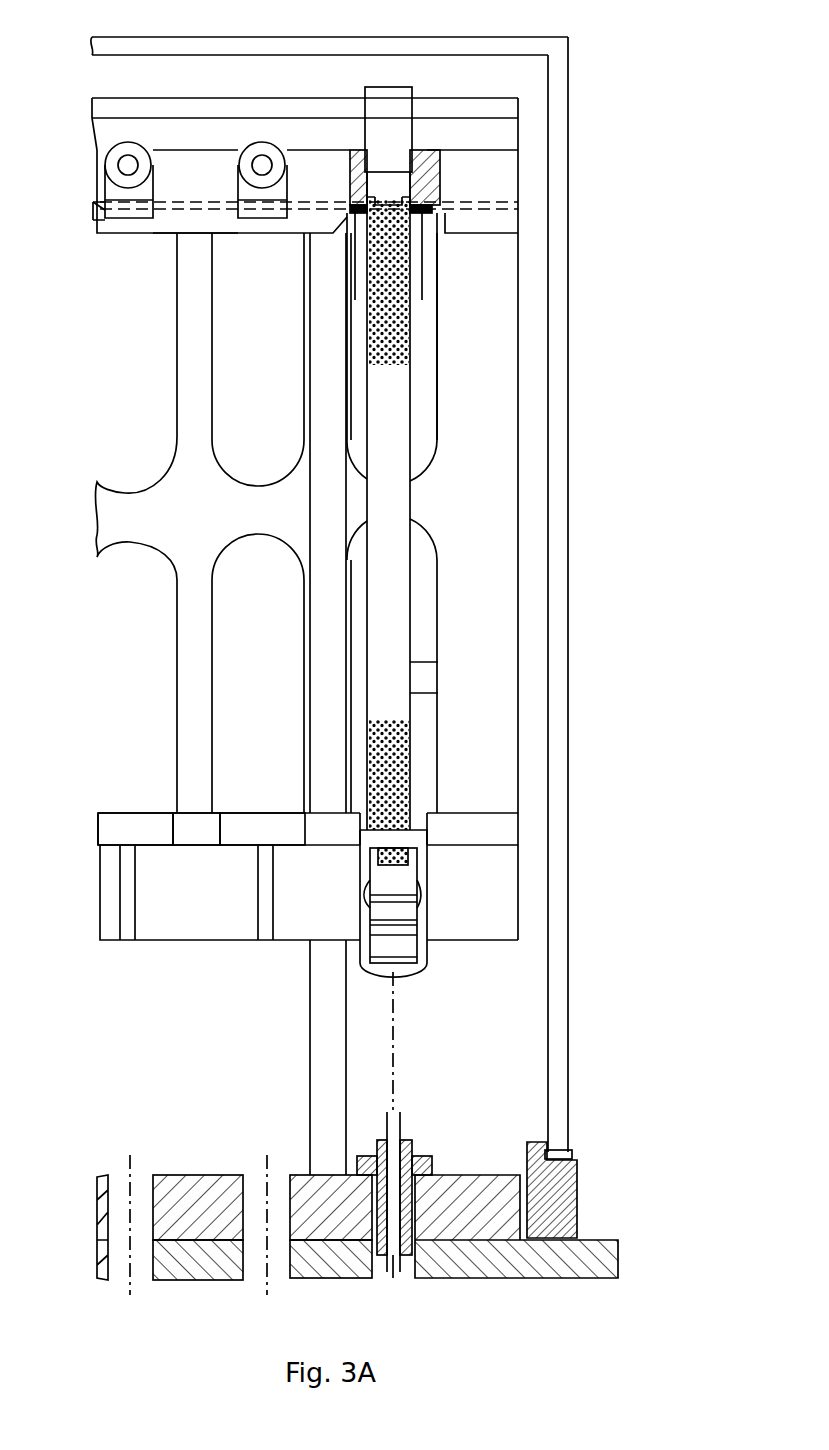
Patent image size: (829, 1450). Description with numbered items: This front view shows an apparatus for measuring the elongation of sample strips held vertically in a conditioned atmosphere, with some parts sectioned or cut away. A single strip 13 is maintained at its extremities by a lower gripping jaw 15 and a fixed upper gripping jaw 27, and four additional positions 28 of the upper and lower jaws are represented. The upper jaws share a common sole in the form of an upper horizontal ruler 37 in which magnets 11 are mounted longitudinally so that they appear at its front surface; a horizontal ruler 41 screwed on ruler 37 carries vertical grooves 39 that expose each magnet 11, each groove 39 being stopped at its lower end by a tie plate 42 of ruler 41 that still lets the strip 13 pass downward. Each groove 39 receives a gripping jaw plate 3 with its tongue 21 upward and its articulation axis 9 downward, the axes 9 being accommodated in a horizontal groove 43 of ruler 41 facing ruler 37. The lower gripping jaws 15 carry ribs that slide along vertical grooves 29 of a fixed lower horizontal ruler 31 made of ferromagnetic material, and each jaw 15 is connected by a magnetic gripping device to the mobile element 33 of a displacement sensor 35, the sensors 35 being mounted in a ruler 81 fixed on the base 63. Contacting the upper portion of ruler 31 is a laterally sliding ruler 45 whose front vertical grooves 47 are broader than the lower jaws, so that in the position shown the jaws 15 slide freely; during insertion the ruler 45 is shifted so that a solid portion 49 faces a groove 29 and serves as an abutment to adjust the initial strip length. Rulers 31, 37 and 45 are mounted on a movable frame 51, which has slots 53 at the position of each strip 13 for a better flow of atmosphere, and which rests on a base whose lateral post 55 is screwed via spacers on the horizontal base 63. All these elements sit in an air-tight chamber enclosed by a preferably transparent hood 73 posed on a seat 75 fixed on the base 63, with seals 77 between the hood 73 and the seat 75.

The upper gripping jaw 27 is at (430, 78).
The additional positions of the upper and lower gripping jaws 28 is at (240, 140).
The magnet 11 is at (270, 160).
The tongue 21 is at (405, 153).
The gripping jaw plate 3 is at (400, 190).
The upper horizontal ruler 37 is at (516, 135).
The horizontal ruler 41 is at (212, 205).
The vertical groove 39 is at (118, 222).
The tie plate 42 is at (141, 224).
The horizontal groove 43 is at (195, 224).
The articulation axis 9 is at (424, 222).
The strip 13 is at (408, 535).
The frame 51 is at (203, 535).
The slot 53 is at (212, 450).
The lateral post 55 is at (310, 1076).
The ruler 45 is at (495, 830).
The vertical groove 47 is at (108, 812).
The solid portion 49 is at (196, 812).
The lower horizontal ruler 31 is at (211, 915).
The vertical groove 29 is at (137, 918).
The lower gripping jaw 15 is at (432, 972).
The displacement sensor 35 is at (400, 1130).
The mobile element 33 is at (416, 1168).
The ruler 81 is at (176, 1183).
The horizontal base 63 is at (590, 1266).
The seat 75 is at (562, 1196).
The seal 77 is at (574, 1154).
The hood 73 is at (558, 606).